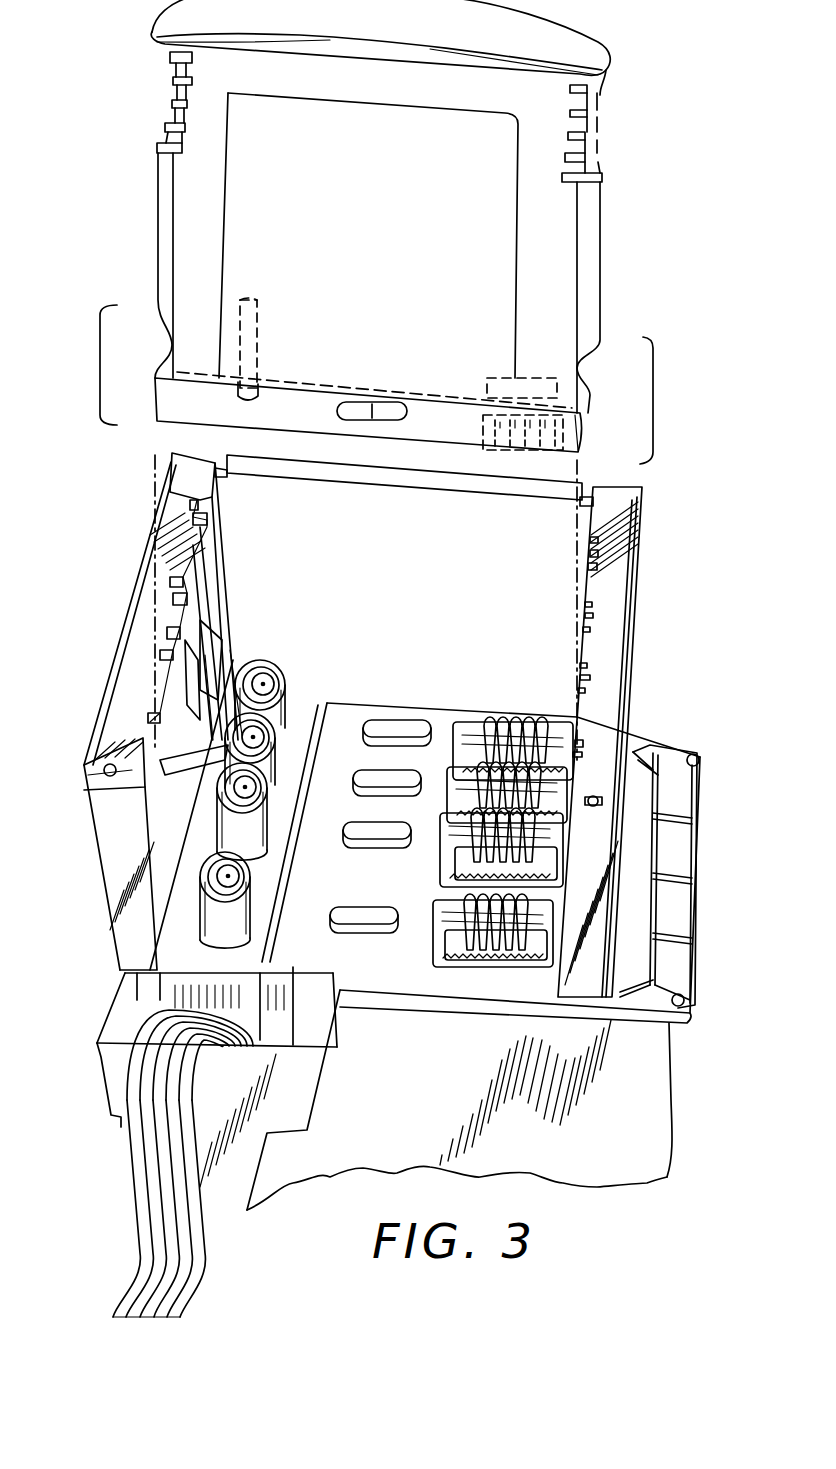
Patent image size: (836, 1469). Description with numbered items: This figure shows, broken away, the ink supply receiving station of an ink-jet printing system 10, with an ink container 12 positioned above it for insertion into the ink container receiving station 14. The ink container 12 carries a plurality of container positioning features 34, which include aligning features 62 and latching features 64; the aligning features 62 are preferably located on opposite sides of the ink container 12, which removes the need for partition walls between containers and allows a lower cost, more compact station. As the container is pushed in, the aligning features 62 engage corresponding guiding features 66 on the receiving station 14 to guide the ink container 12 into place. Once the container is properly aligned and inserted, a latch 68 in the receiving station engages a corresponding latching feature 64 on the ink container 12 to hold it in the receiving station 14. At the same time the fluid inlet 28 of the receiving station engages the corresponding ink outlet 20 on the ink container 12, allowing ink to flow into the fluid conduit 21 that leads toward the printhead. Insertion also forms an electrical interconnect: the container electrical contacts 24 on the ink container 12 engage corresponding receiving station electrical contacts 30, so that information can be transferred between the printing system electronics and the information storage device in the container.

The ink-jet printing system 10 is at (658, 1112).
The ink container 12 is at (368, 189).
The ink container receiving station 14 is at (643, 555).
The ink outlet 20 is at (262, 412).
The fluid conduit 21 is at (132, 1162).
The container electrical contacts 24 is at (505, 450).
The fluid inlet 28 is at (287, 723).
The receiving station electrical contacts 30 is at (477, 803).
The container positioning features 34 is at (100, 360).
The aligning features 62 is at (153, 403).
The latching features 64 is at (160, 353).
The guiding features 66 is at (190, 505).
The latch 68 is at (214, 707).